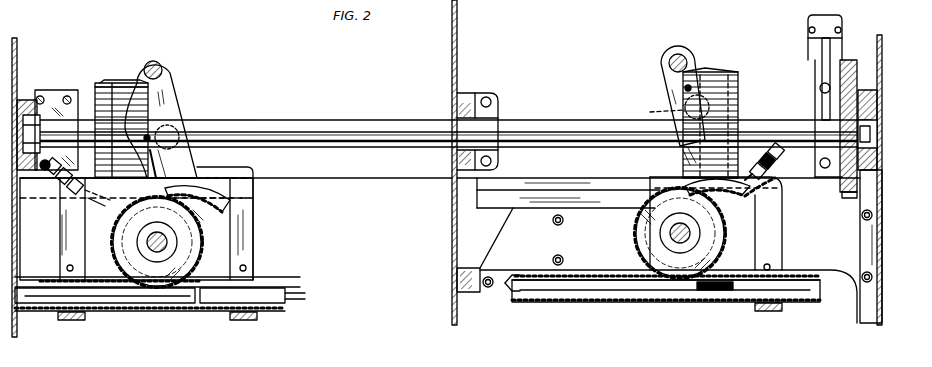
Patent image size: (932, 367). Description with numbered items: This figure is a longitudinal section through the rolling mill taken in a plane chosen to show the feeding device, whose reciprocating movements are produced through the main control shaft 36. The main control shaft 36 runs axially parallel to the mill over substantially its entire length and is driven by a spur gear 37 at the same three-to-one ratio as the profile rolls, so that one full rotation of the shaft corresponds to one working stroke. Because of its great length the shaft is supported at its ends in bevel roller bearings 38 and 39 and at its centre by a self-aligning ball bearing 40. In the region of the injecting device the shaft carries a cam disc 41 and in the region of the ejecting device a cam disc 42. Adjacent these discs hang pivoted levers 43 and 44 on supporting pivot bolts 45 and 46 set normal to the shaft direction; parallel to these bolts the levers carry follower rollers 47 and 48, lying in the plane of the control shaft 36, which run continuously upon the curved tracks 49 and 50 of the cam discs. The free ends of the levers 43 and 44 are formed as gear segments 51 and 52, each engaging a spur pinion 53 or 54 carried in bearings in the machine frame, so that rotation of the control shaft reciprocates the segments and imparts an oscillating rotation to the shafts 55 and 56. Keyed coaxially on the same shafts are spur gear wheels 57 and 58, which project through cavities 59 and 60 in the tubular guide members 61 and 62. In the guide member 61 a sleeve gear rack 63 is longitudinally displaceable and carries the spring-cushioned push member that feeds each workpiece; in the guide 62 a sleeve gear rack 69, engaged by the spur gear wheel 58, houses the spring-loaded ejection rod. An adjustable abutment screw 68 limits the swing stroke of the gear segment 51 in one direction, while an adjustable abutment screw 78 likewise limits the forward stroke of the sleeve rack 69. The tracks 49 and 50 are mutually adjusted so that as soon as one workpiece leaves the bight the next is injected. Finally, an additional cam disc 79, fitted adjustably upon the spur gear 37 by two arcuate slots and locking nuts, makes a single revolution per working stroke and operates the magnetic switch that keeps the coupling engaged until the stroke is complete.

The main control shaft 36 is at (356, 121).
The spur gear 37 is at (858, 70).
The bevel roller bearing 38 is at (28, 102).
The bevel roller bearing 39 is at (875, 104).
The self-aligning ball bearing 40 is at (458, 108).
The cam disc 41 is at (108, 86).
The cam disc 42 is at (740, 92).
The pivoted lever 43 is at (170, 90).
The pivoted lever 44 is at (661, 68).
The supporting pivot bolt 45 is at (162, 70).
The supporting pivot bolt 46 is at (690, 66).
The follower roller 47 is at (178, 116).
The follower roller 48 is at (672, 112).
The curved track 49 is at (153, 176).
The curved track 50 is at (682, 144).
The gear segment 51 is at (215, 200).
The gear segment 52 is at (765, 190).
The spur pinion 53 is at (200, 211).
The spur pinion 54 is at (720, 208).
The shaft 55 is at (150, 240).
The shaft 56 is at (672, 233).
The spur gear wheel 57 is at (200, 250).
The spur gear wheel 58 is at (720, 247).
The cavity 59 is at (135, 262).
The cavity 60 is at (655, 262).
The tubular guide member 61 is at (275, 308).
The tubular guide member 62 is at (790, 303).
The sleeve gear rack 63 is at (42, 282).
The adjustable abutment screw 68 is at (48, 178).
The sleeve gear rack 69 is at (590, 278).
The adjustable abutment screw 78 is at (780, 152).
The additional cam disc 79 is at (838, 62).